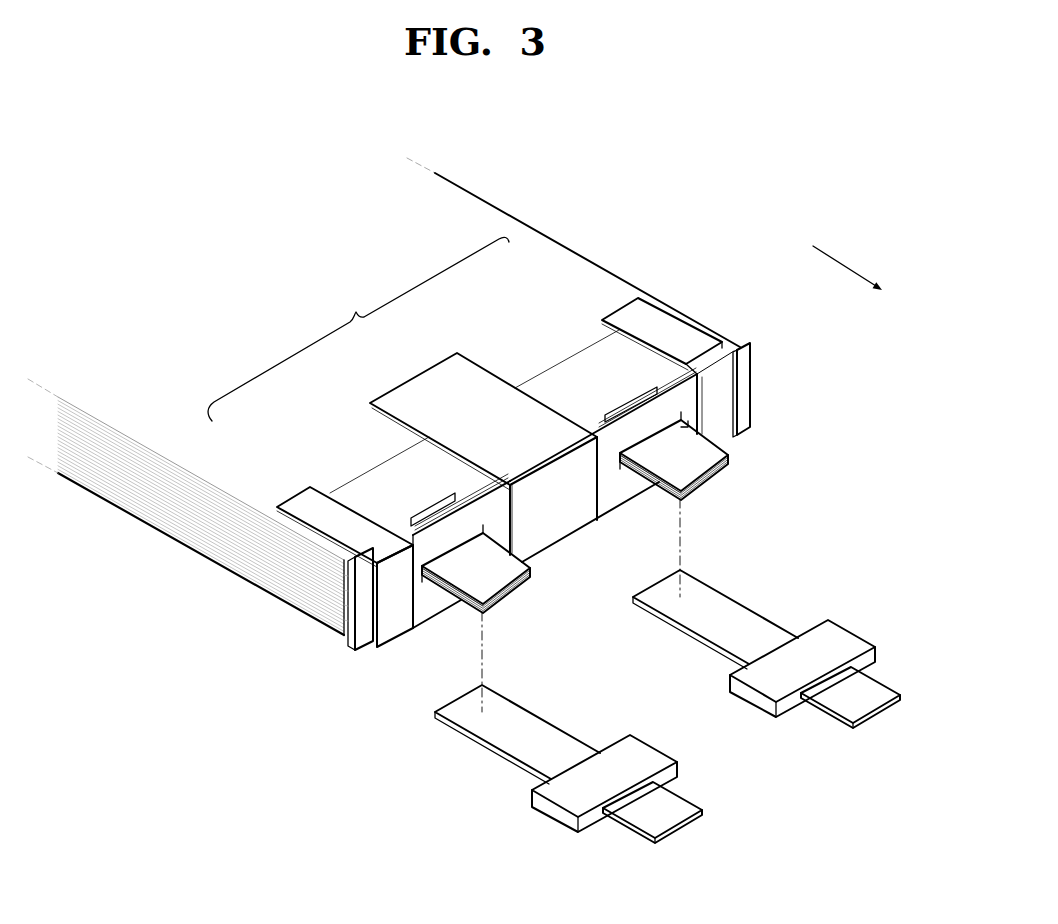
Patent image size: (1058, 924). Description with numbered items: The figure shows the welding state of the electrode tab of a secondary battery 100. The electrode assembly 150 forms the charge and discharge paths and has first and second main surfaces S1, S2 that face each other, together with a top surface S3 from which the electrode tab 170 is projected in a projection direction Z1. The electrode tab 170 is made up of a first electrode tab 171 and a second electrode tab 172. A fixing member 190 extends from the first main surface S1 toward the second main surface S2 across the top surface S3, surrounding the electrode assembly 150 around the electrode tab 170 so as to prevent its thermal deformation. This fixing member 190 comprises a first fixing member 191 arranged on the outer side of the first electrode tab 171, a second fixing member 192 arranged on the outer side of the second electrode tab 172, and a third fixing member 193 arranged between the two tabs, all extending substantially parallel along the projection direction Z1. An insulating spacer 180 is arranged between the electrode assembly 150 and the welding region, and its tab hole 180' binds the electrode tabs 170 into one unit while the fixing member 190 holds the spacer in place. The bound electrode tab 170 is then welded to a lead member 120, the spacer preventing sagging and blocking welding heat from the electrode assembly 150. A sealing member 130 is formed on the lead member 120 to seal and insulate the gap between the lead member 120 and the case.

The secondary battery 100 is at (714, 208).
The electrode assembly 150 is at (472, 213).
The fixing member 190 is at (358, 329).
The first fixing member 191 is at (620, 312).
The second fixing member 192 is at (302, 502).
The third fixing member 193 is at (420, 388).
The insulating spacer 180 is at (737, 357).
The tab hole 180' is at (751, 398).
The electrode tab 170 is at (742, 463).
The first electrode tab 171 is at (697, 463).
The second electrode tab 172 is at (500, 577).
The sealing member 130 is at (838, 638).
The lead member 120 is at (883, 693).
The first main surface S1 is at (168, 452).
The second main surface S2 is at (195, 553).
The top surface S3 is at (340, 560).
The projection direction Z1 is at (847, 262).